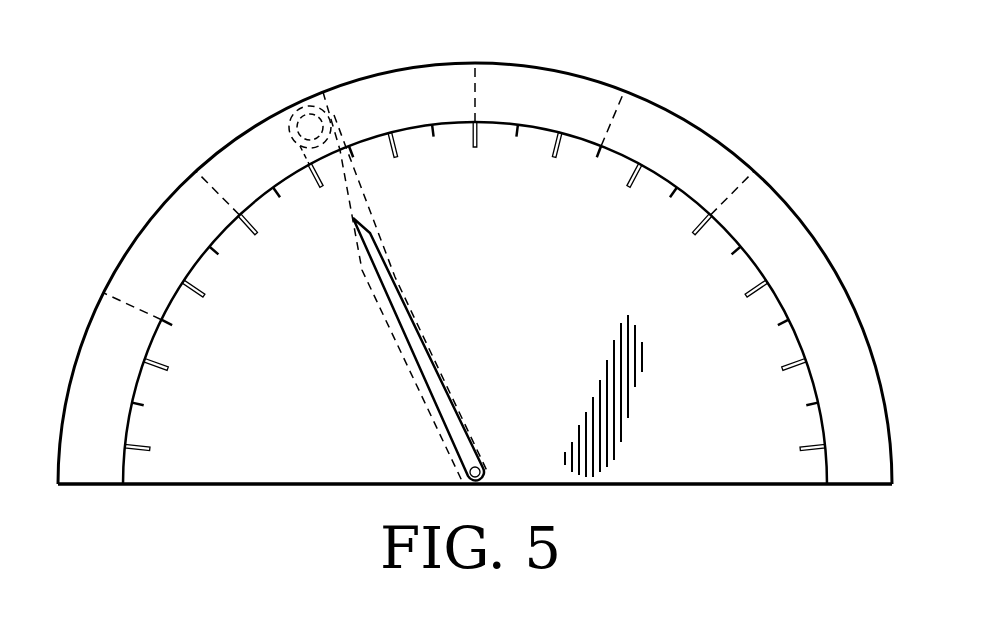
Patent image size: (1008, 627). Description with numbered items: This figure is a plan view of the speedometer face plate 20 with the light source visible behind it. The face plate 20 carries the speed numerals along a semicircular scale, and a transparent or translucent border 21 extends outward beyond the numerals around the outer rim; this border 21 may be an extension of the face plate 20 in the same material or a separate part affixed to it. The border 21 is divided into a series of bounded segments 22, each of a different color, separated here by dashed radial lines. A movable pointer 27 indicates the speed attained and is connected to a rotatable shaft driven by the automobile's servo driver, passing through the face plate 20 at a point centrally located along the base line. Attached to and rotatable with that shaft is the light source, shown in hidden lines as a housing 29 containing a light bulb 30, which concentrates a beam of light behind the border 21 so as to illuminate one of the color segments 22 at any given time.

The face plate 20 is at (272, 453).
The border 21 is at (806, 222).
The segments 22 is at (683, 138).
The pointer 27 is at (412, 313).
The housing 29 is at (289, 137).
The light bulb 30 is at (300, 113).